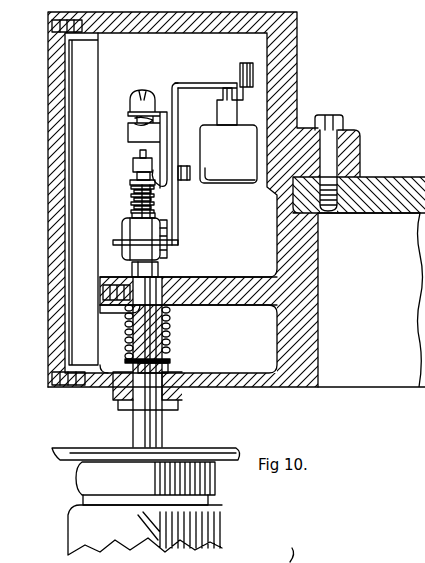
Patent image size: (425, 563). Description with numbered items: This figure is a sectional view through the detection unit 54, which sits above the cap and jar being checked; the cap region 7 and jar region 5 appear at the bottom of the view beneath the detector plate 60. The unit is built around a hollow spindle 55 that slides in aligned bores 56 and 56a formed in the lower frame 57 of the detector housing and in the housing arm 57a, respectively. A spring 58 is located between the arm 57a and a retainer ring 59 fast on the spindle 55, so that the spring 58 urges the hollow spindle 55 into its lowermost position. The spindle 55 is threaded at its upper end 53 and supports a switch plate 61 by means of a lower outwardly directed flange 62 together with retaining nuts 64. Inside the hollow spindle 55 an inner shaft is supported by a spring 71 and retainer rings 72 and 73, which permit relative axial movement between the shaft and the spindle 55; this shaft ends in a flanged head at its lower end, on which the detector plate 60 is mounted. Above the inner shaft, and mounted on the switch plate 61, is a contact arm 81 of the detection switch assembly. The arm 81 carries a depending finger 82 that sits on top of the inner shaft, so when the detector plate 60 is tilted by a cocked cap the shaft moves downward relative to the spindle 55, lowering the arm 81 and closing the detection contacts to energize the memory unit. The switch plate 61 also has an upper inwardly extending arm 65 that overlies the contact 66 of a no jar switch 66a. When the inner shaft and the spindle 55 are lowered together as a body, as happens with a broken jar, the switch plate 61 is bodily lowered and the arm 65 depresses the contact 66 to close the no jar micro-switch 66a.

The detection unit 54 is at (298, 83).
The lower frame 57 is at (228, 376).
The arm 57a is at (235, 278).
The upper inwardly extending arm 65 is at (225, 82).
The contact 66 is at (220, 102).
The no jar switch 66a is at (245, 143).
The switch plate 61 is at (180, 210).
The lower outwardly directed flange 62 is at (180, 241).
The depending finger 82 is at (133, 165).
The retainer ring 73 is at (135, 178).
The spring 71 is at (135, 192).
The retainer ring 72 is at (137, 209).
The retaining nuts 64 is at (124, 253).
The upper end 53 is at (160, 267).
The spring 58 is at (125, 326).
The bore 56a is at (170, 302).
The retainer ring 59 is at (130, 361).
The bore 56 is at (166, 363).
The hollow spindle 55 is at (163, 428).
The detector plate 60 is at (229, 450).
The ring 7 is at (216, 479).
The body 5 is at (68, 532).
The contact arm 81 is at (279, 552).